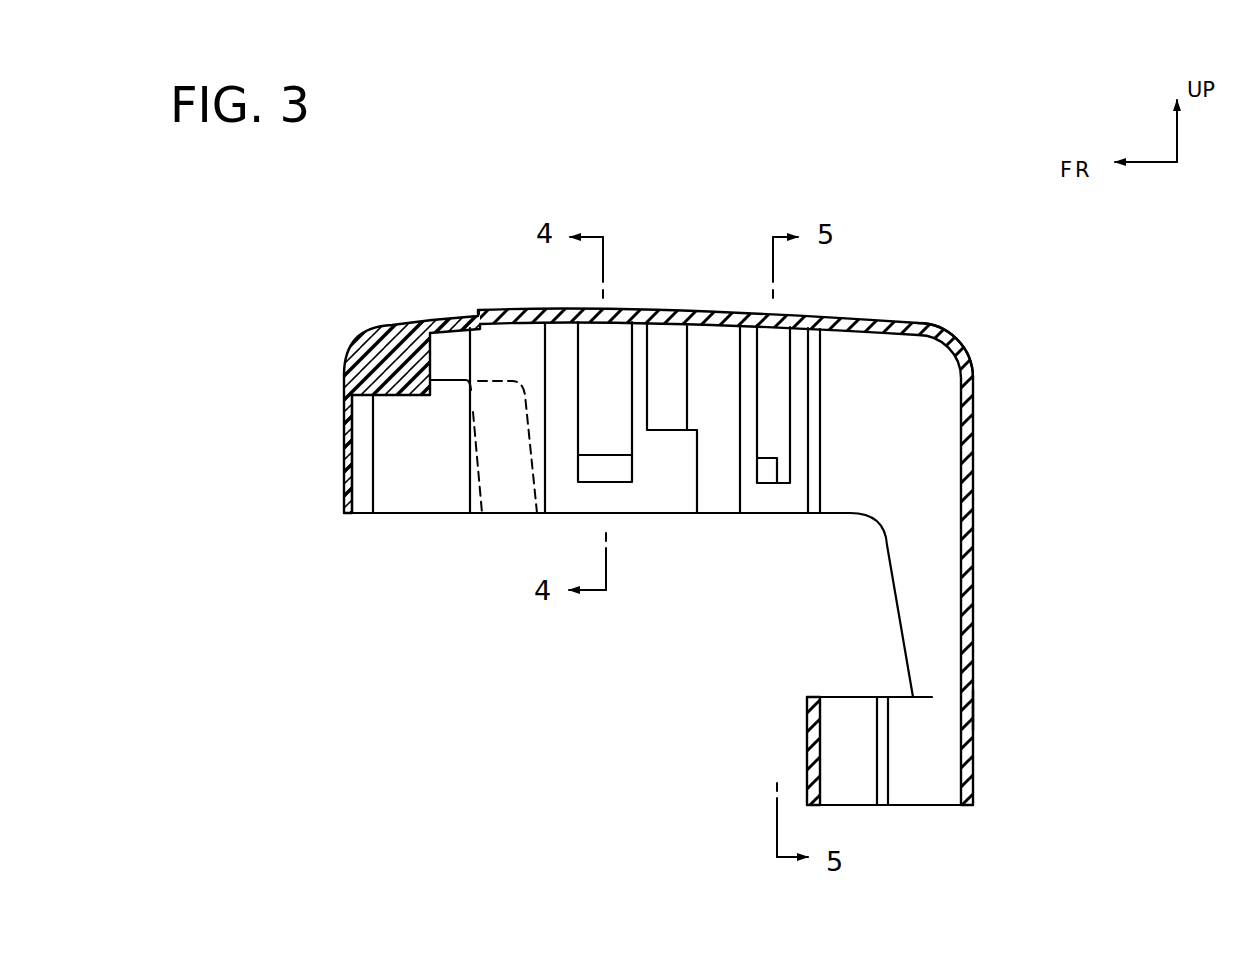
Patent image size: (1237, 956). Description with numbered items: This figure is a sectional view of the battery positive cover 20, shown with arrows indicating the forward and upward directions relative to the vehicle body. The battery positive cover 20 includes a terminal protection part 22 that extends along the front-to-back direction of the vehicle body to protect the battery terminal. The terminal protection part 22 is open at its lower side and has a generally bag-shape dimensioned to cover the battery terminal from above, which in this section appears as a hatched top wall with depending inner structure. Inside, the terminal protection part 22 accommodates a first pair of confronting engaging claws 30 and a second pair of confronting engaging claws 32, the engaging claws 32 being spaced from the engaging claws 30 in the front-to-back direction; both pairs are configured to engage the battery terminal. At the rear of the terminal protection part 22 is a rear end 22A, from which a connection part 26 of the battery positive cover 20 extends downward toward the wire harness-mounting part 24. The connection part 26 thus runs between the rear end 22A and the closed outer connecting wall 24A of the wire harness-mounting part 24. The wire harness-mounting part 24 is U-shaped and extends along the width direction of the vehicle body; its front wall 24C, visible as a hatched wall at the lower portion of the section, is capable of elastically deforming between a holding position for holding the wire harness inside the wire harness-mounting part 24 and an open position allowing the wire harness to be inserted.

The battery positive cover 20 is at (771, 544).
The terminal protection part 22 is at (845, 298).
The rear end of the terminal protection part 22A is at (913, 321).
The wire harness-mounting part 24 is at (745, 638).
The closed outer connecting wall 24A is at (1010, 700).
The front wall 24C is at (807, 752).
The connection part 26 is at (988, 550).
The first pair of confronting engaging claws 30 is at (617, 474).
The second pair of confronting engaging claws 32 is at (768, 477).